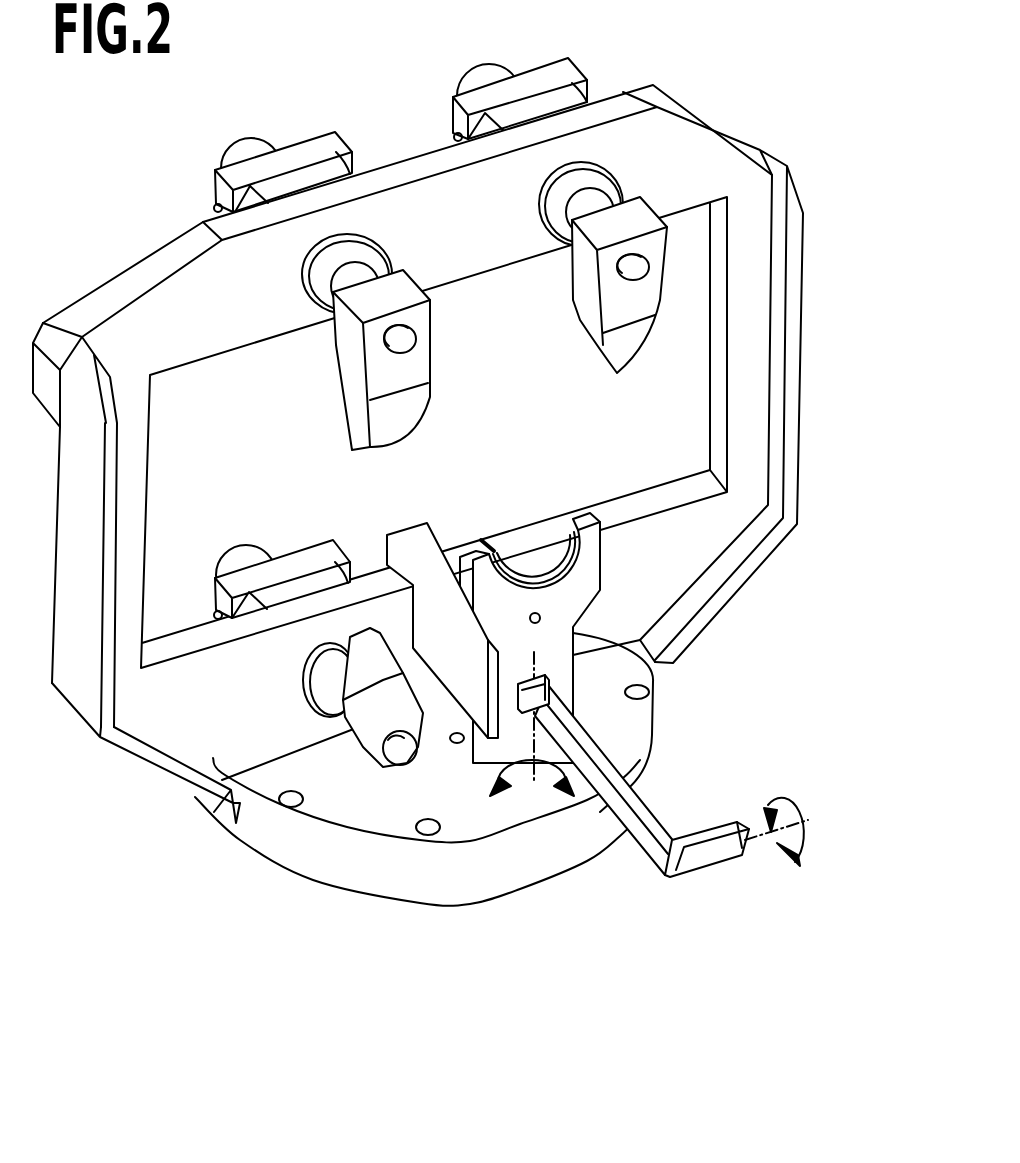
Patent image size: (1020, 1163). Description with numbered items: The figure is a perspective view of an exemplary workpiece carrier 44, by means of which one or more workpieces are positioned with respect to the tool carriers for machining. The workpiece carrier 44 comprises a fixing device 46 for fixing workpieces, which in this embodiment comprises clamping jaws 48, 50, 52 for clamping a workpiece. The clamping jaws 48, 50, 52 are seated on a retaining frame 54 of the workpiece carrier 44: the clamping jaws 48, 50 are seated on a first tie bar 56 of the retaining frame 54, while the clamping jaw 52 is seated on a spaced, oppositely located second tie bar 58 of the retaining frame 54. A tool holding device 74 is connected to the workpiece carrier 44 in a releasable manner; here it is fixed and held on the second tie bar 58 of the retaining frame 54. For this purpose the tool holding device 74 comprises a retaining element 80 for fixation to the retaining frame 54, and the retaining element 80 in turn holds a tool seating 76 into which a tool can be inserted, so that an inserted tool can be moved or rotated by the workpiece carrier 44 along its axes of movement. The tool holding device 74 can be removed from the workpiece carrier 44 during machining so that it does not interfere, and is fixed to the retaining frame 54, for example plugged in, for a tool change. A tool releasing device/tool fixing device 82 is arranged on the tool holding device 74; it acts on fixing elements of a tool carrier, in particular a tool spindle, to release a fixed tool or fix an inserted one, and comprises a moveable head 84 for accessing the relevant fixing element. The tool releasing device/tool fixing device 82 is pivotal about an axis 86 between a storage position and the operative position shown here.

The workpiece carrier 44 is at (221, 878).
The fixing device 46 is at (738, 268).
The clamping jaw 48 is at (398, 408).
The clamping jaw 50 is at (633, 343).
The clamping jaw 52 is at (320, 717).
The retaining frame 54 is at (429, 205).
The first tie bar 56 is at (480, 257).
The second tie bar 58 is at (177, 713).
The tool holding device 74 is at (655, 682).
The tool seating 76 is at (570, 568).
The retaining element 80 is at (427, 620).
The tool releasing device/tool fixing device 82 is at (696, 815).
The moveable head 84 is at (747, 837).
The axis 86 is at (483, 765).